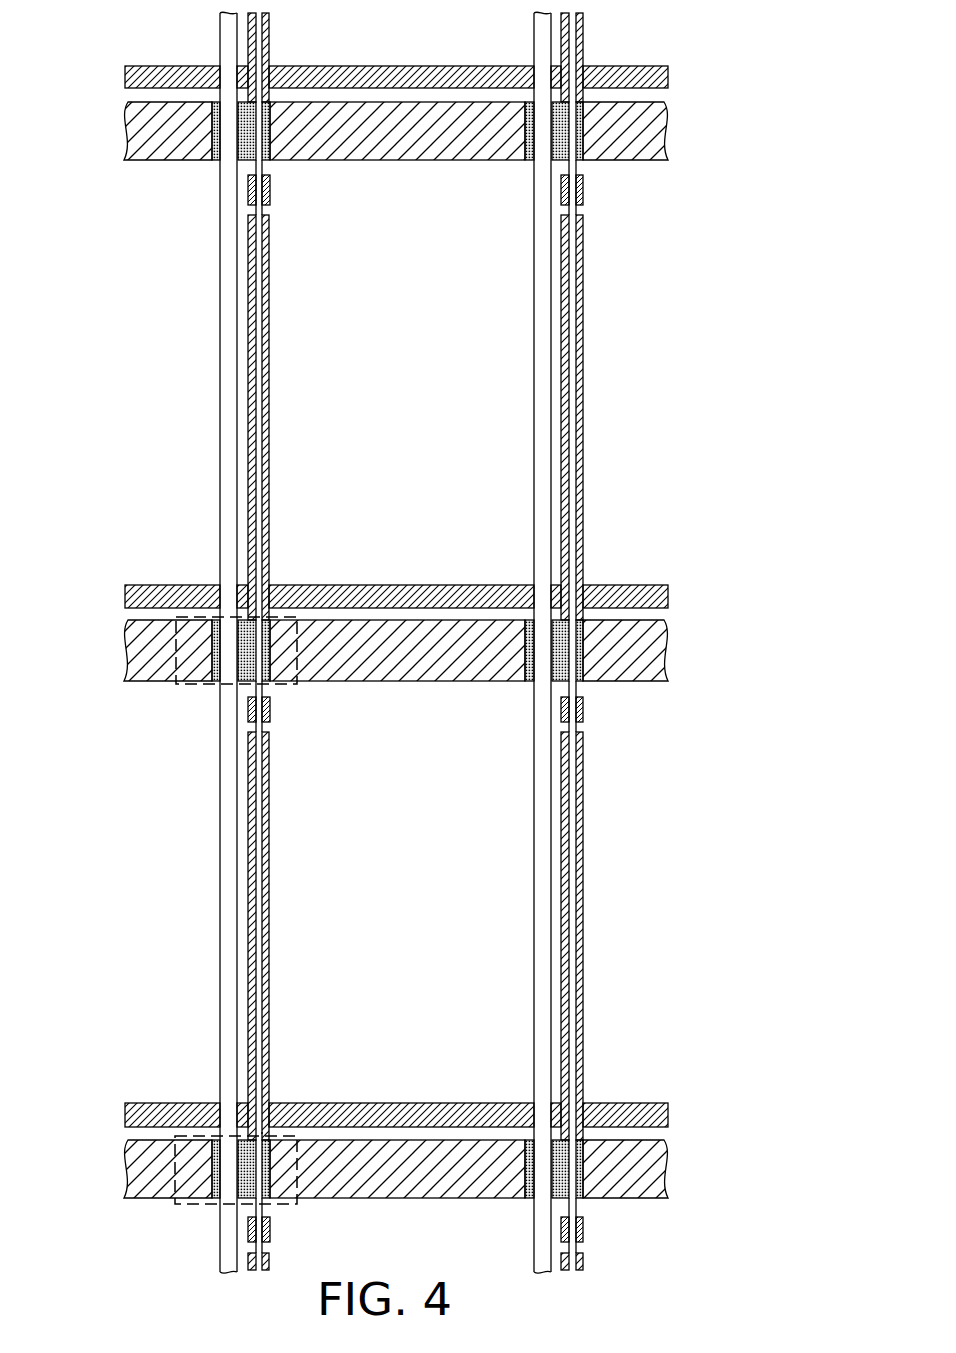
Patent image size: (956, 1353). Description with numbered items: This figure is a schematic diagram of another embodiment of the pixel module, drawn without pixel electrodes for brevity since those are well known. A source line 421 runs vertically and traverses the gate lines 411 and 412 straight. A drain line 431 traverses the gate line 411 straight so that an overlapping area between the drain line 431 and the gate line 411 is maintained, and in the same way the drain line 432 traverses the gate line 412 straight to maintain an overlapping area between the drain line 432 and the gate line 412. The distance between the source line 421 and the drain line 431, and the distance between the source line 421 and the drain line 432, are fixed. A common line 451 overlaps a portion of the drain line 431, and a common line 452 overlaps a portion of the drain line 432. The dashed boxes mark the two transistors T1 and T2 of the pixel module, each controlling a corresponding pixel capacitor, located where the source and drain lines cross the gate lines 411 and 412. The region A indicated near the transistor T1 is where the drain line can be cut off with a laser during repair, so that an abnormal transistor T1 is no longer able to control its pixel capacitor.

The gate line 411 is at (152, 1165).
The gate line 412 is at (152, 648).
The source line 421 is at (232, 308).
The drain line 431 is at (248, 723).
The drain line 432 is at (250, 204).
The common line 451 is at (152, 1118).
The common line 452 is at (152, 600).
The transistor T1 is at (180, 1136).
The transistor T2 is at (180, 617).
The region A is at (262, 1133).